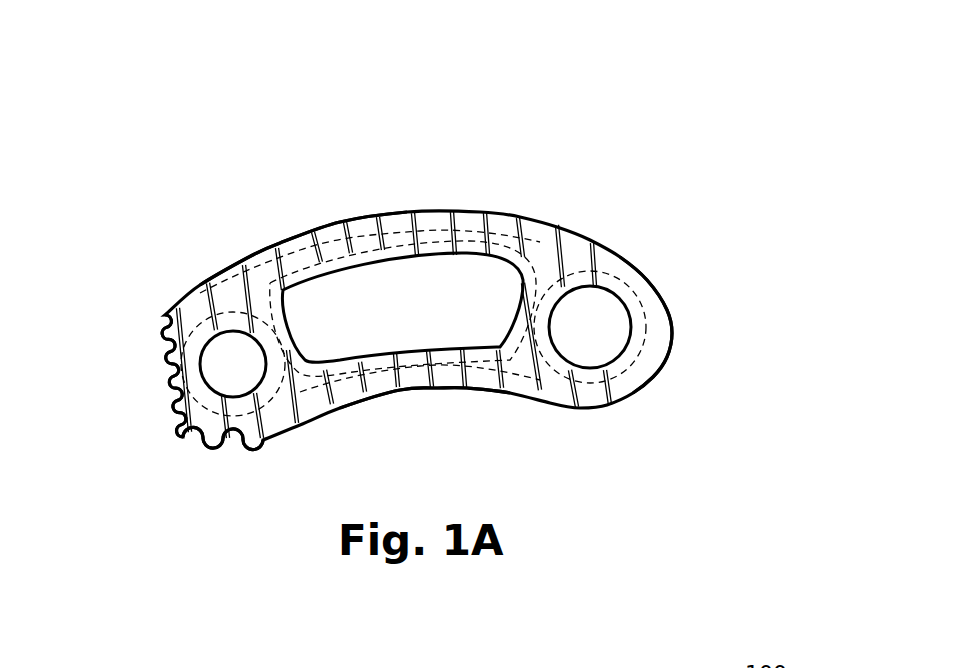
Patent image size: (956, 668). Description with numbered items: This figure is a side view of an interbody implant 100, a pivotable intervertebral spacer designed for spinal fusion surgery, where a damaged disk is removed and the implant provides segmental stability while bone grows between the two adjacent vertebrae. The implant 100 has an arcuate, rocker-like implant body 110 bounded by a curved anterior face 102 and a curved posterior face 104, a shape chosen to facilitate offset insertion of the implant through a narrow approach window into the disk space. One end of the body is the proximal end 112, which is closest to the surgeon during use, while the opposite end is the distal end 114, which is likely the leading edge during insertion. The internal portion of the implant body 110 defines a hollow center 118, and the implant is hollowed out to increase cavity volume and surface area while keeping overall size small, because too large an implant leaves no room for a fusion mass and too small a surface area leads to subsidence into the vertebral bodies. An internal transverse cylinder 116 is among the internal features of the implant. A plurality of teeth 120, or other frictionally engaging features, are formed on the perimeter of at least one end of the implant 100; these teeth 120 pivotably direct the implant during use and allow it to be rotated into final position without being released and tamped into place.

The interbody implant 100 is at (651, 103).
The anterior face 102 is at (430, 415).
The posterior face 104 is at (299, 190).
The implant body 110 is at (531, 218).
The proximal end 112 is at (122, 352).
The distal end 114 is at (720, 338).
The internal transverse cylinder 116 is at (205, 317).
The window opening 118 is at (429, 277).
The teeth 120 is at (197, 458).